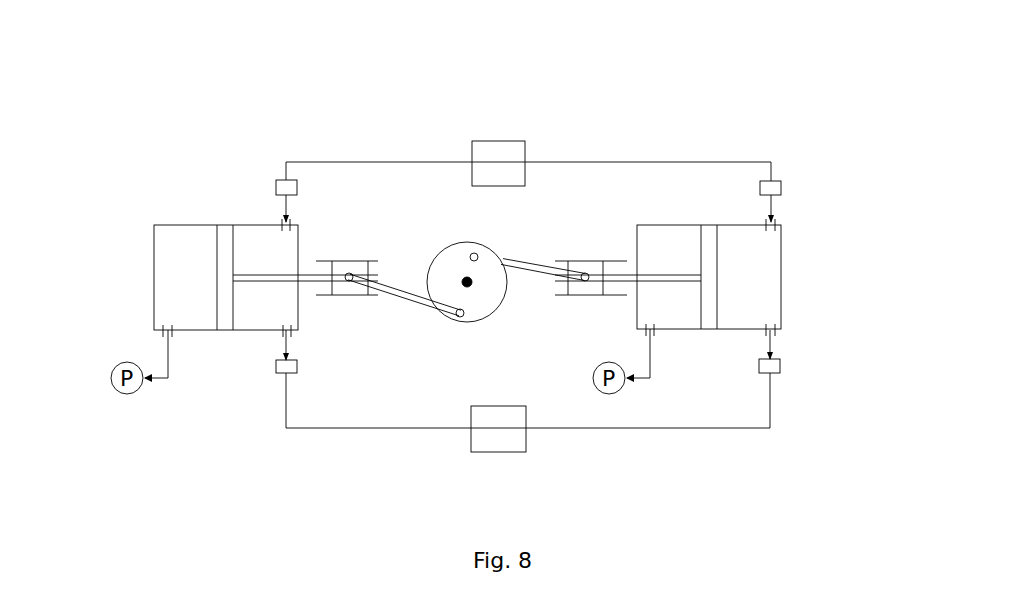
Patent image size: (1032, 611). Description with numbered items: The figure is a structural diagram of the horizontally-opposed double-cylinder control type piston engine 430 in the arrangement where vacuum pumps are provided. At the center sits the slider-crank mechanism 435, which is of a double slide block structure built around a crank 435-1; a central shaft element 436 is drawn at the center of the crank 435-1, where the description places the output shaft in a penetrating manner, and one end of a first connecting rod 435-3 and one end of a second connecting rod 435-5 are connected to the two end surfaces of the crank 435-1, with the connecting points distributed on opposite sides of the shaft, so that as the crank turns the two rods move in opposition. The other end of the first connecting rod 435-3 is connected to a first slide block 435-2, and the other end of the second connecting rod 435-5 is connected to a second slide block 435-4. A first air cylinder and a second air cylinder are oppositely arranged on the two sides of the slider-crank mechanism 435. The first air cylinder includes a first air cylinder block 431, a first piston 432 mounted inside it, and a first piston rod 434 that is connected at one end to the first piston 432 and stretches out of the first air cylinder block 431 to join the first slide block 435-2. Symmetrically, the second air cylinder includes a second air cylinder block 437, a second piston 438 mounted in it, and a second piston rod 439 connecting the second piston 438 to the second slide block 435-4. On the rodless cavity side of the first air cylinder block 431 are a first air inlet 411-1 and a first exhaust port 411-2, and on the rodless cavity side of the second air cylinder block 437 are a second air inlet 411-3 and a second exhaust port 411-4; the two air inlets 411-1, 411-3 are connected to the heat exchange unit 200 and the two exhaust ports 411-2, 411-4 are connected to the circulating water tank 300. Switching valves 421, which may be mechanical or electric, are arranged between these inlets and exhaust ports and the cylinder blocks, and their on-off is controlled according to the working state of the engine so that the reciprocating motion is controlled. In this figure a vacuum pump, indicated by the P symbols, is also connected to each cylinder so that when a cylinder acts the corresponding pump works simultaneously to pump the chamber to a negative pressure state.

The heat exchange unit 200 is at (492, 150).
The circulating water tank 300 is at (507, 425).
The horizontally-opposed double-cylinder control type piston engine 430 is at (238, 92).
The switching valve 421 is at (770, 187).
The first air inlet 411-1 is at (774, 219).
The first exhaust port 411-2 is at (777, 332).
The second air inlet 411-3 is at (283, 215).
The second exhaust port 411-4 is at (298, 332).
The first air cylinder block 431 is at (759, 258).
The first piston 432 is at (703, 282).
The first piston rod 434 is at (624, 273).
The slider-crank mechanism 435 is at (488, 287).
The crank 435-1 is at (458, 253).
The first slide block 435-2 is at (587, 272).
The first connecting rod 435-3 is at (505, 348).
The second slide block 435-4 is at (356, 266).
The second connecting rod 435-5 is at (408, 300).
The rotating shaft 436 is at (465, 287).
The second air cylinder block 437 is at (197, 293).
The second piston 438 is at (228, 295).
The second piston rod 439 is at (280, 275).